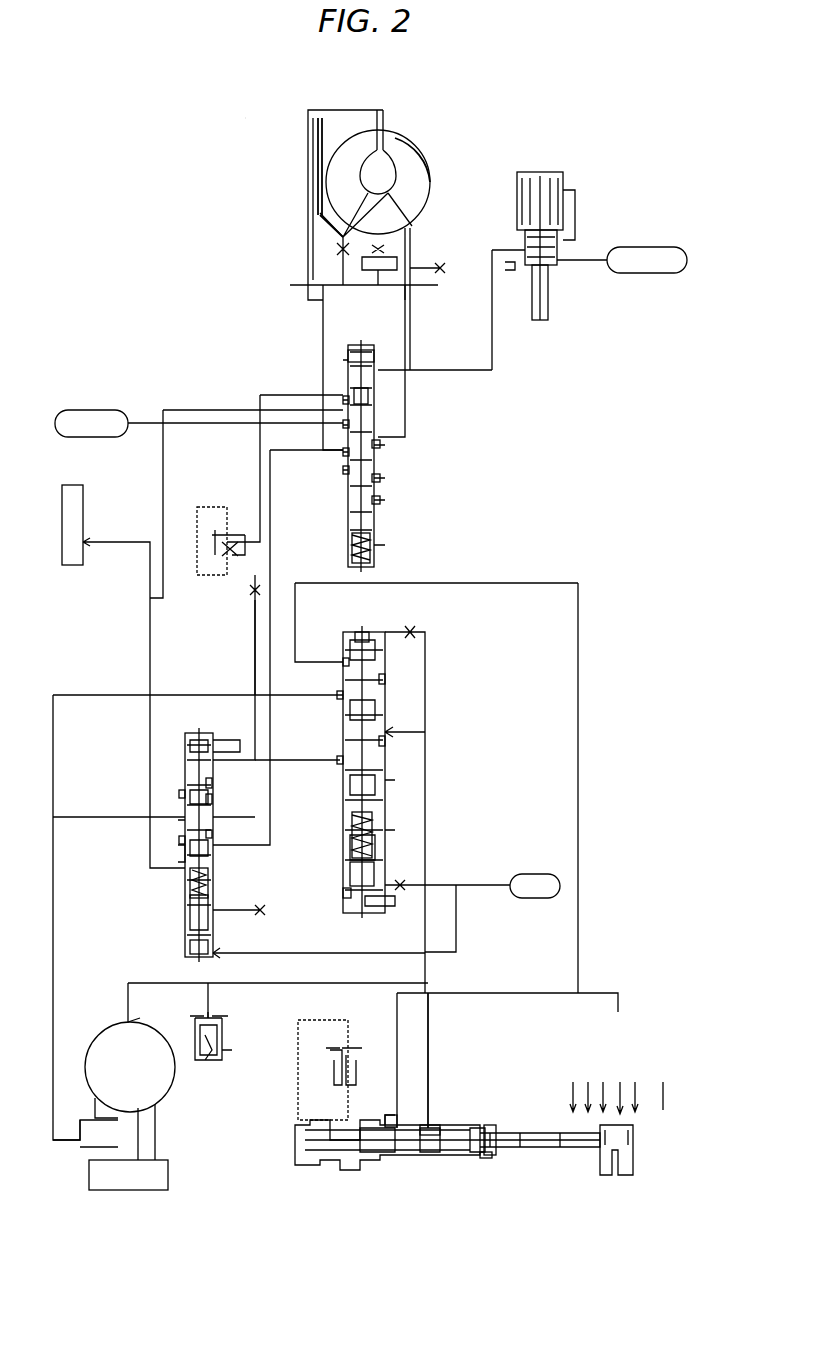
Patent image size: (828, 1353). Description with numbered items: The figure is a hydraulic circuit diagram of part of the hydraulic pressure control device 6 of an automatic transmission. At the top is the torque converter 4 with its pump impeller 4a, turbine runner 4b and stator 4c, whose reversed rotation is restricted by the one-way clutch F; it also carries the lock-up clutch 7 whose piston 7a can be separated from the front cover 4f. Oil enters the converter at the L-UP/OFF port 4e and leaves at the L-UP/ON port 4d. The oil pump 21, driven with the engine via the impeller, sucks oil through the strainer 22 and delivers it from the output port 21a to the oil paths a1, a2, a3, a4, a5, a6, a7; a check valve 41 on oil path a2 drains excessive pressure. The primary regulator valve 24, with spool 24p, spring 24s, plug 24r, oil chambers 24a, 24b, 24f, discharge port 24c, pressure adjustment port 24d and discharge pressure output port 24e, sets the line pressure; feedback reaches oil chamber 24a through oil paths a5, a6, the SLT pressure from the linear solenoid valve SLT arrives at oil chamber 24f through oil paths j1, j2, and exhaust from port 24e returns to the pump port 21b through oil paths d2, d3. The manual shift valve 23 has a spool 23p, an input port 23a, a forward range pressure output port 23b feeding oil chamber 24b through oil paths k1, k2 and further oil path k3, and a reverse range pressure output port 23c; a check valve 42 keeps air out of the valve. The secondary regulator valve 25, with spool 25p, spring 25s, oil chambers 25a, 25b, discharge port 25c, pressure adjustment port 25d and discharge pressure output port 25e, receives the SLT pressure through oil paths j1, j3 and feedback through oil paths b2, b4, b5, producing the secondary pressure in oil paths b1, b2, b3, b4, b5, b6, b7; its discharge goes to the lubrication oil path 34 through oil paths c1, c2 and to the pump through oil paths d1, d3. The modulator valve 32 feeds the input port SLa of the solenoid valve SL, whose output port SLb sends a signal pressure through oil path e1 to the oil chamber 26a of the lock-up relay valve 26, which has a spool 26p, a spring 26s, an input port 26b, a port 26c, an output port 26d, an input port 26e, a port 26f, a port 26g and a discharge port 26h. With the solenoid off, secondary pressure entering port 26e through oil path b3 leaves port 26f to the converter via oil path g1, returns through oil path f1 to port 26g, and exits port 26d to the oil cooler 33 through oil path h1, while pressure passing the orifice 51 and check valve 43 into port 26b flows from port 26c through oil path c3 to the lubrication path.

The torque converter 4 is at (378, 106).
The pump impeller 4a is at (400, 146).
The turbine runner 4b is at (356, 156).
The stator 4c is at (410, 214).
The L-UP/ON port 4d is at (412, 292).
The L-UP/OFF port 4e is at (306, 300).
The front cover 4f is at (316, 155).
The hydraulic pressure control device 6 is at (245, 118).
The lock-up clutch 7 is at (302, 145).
The piston 7a is at (314, 176).
The one-way clutch F is at (376, 252).
The oil pump 21 is at (176, 1096).
The output port 21a is at (140, 1016).
The port 21b is at (80, 1124).
The strainer 22 is at (152, 1152).
The manual shift valve 23 is at (446, 1166).
The input port 23a is at (438, 1126).
The forward range pressure output port 23b is at (398, 1120).
The reverse range pressure output port 23c is at (490, 1126).
The spool 23p is at (486, 1158).
The primary regulator valve 24 is at (374, 632).
The oil chamber 24a is at (364, 630).
The oil chamber 24b is at (342, 660).
The discharge port 24c is at (338, 702).
The pressure adjustment port 24d is at (384, 740).
The discharge pressure output port 24e is at (338, 768).
The oil chamber 24f is at (342, 892).
The spool 24p is at (386, 678).
The plug 24r is at (346, 862).
The spring 24s is at (346, 830).
The secondary regulator valve 25 is at (206, 734).
The oil chamber 25a is at (226, 783).
The oil chamber 25b is at (186, 952).
The discharge port 25c is at (184, 806).
The pressure adjustment port 25d is at (214, 848).
The discharge pressure output port 25e is at (184, 845).
The spool 25p is at (226, 797).
The spring 25s is at (190, 890).
The lock-up relay valve 26 is at (362, 342).
The oil chamber 26a is at (378, 400).
The input port 26b is at (350, 357).
The port 26c is at (342, 400).
The output port 26d is at (342, 426).
The input port 26e is at (342, 454).
The port 26f is at (342, 472).
The port 26g is at (380, 446).
The discharge port 26h is at (380, 478).
The spool 26p is at (380, 500).
The spring 26s is at (380, 546).
The modulator valve 32 is at (650, 247).
The oil cooler 33 is at (90, 408).
The lubrication oil path 34 is at (70, 486).
The check valve 41 is at (210, 1066).
The check valve 42 is at (328, 1076).
The check valve 43 is at (236, 542).
The orifice 51 is at (248, 594).
The solenoid valve SL is at (548, 168).
The input port SLa is at (570, 264).
The output port SLb is at (504, 250).
The linear solenoid valve SLT is at (538, 872).
The oil path a1 is at (150, 986).
The oil path a2 is at (210, 1000).
The oil path a3 is at (290, 984).
The oil path a4 is at (426, 840).
The oil path a5 is at (398, 732).
The oil path a6 is at (426, 646).
The oil path a7 is at (428, 1066).
The oil path b1 is at (294, 762).
The oil path b2 is at (268, 846).
The oil path b3 is at (296, 628).
The oil path b4 is at (234, 823).
The oil path b5 is at (256, 756).
The oil path b6 is at (253, 638).
The oil path b7 is at (262, 472).
The oil path c1 is at (150, 782).
The oil path c2 is at (140, 542).
The oil path c3 is at (165, 498).
The oil path d1 is at (100, 820).
The oil path d2 is at (54, 772).
The oil path d3 is at (54, 950).
The oil path e1 is at (492, 372).
The oil path f1 is at (407, 416).
The oil path g1 is at (322, 345).
The oil path h1 is at (228, 424).
The oil path j1 is at (488, 890).
The oil path j2 is at (402, 882).
The oil path j3 is at (334, 954).
The oil path k1 is at (458, 1004).
The oil path k2 is at (580, 920).
The oil path k3 is at (590, 994).